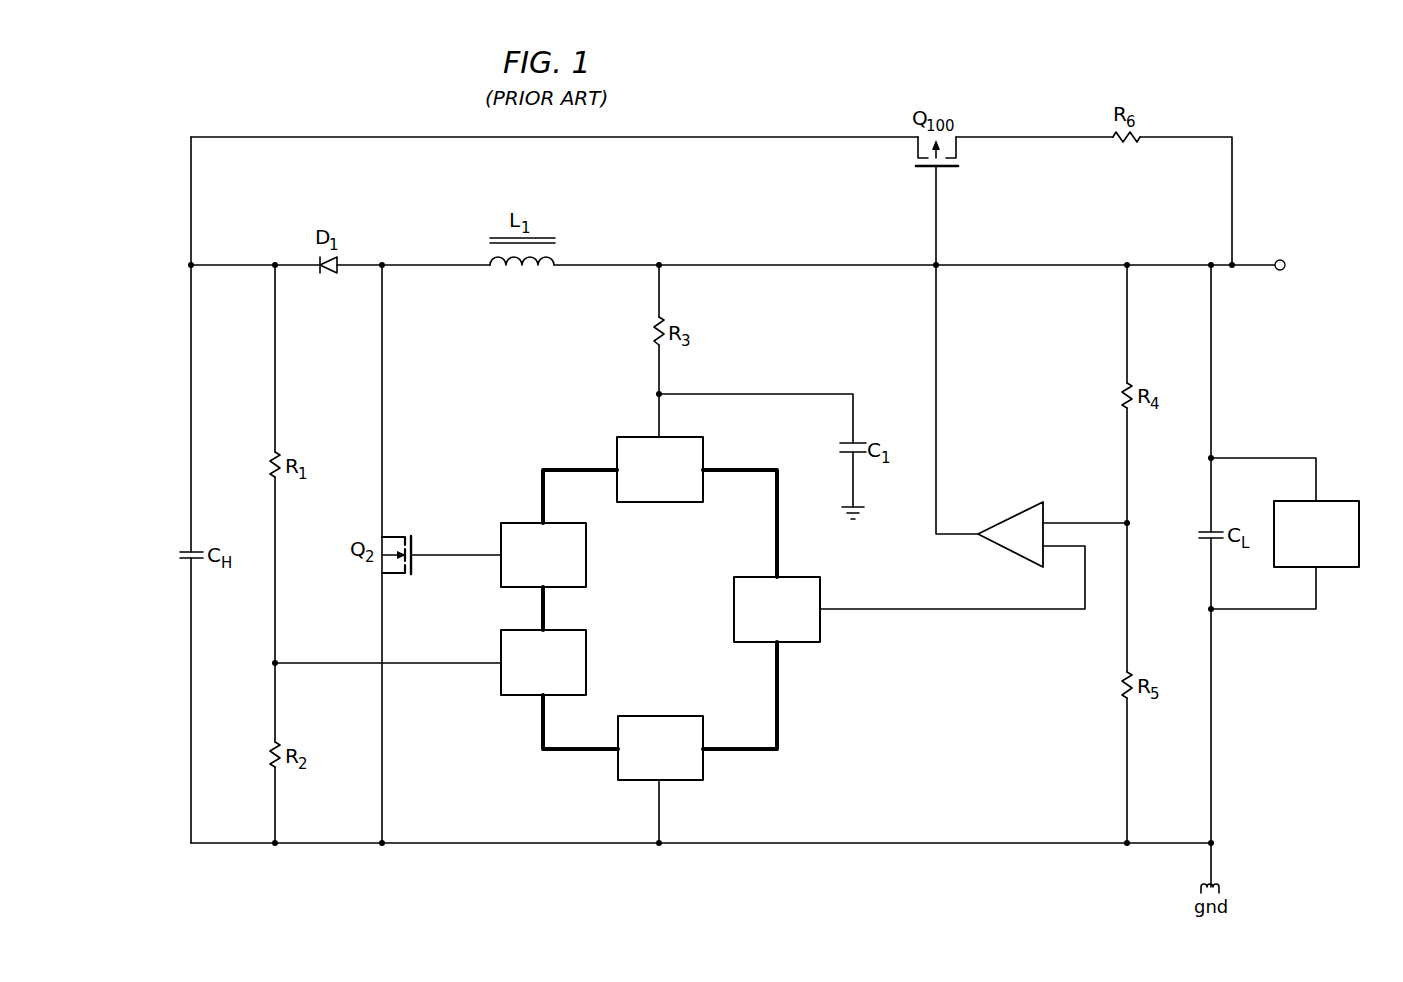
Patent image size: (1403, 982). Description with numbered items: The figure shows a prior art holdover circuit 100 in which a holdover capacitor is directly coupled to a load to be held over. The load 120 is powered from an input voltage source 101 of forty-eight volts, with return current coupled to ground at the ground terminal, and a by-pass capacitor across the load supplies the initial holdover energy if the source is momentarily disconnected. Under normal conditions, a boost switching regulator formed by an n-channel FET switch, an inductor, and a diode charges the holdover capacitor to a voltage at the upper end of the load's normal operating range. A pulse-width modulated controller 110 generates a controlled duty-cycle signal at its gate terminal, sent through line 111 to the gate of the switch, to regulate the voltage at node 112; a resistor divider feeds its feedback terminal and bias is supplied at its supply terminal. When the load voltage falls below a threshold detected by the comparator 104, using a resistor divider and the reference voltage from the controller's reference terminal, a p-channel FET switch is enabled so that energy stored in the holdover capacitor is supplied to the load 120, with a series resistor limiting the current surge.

The power supply circuit (prior art) 100 is at (300, 99).
The input voltage source 101 is at (1283, 259).
The comparator 104 is at (1010, 517).
The PWM controller 110 is at (641, 641).
The line 111 is at (458, 553).
The node 112 is at (191, 265).
The load 120 is at (1338, 500).